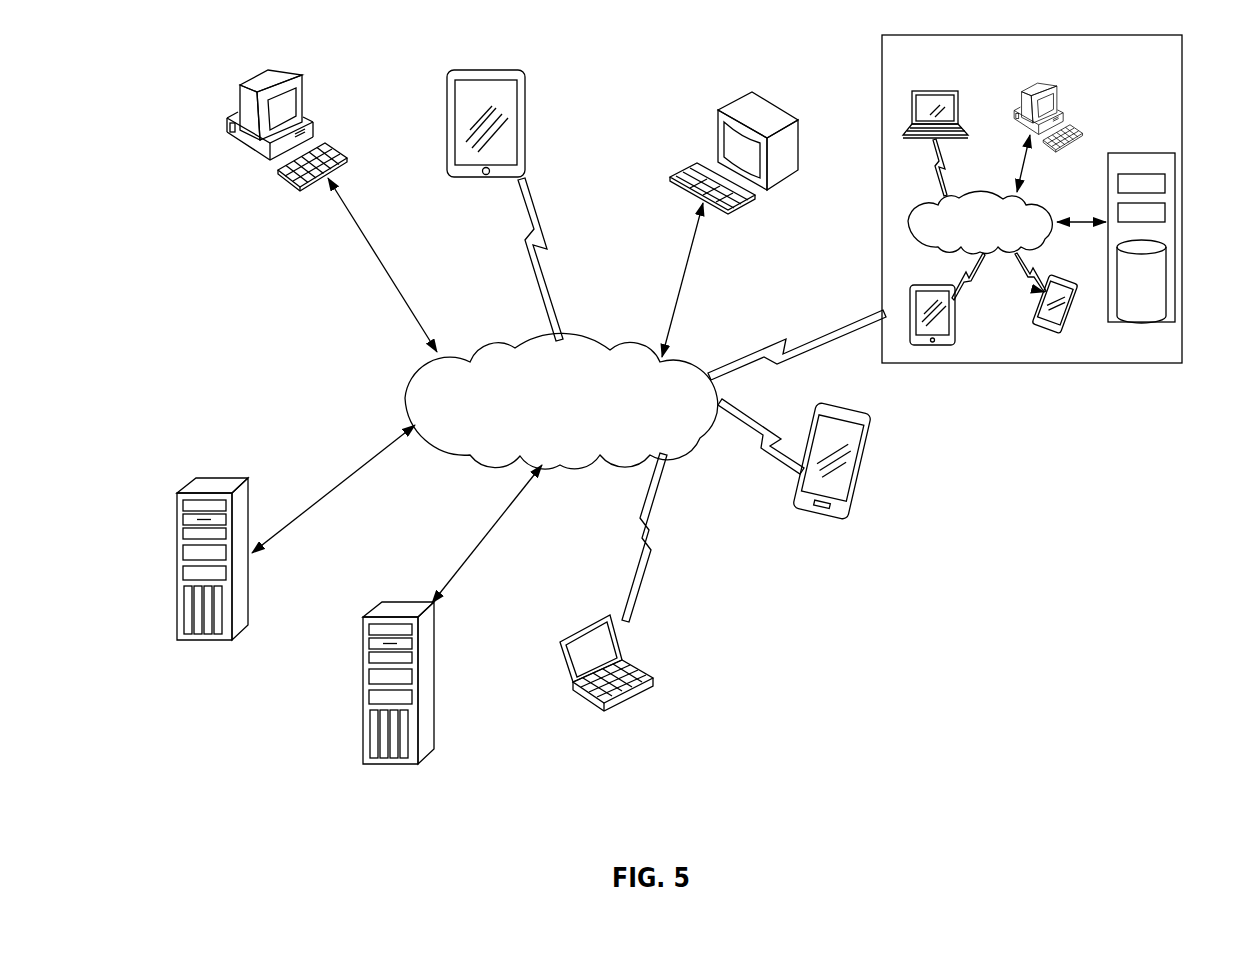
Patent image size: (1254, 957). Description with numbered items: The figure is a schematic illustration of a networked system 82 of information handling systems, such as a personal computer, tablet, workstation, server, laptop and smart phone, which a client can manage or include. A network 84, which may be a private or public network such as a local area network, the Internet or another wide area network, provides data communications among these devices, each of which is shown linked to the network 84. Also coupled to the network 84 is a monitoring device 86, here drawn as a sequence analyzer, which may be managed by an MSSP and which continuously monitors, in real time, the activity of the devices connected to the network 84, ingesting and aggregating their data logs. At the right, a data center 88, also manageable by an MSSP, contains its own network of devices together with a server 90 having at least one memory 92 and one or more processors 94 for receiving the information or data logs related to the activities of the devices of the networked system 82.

The networked system 82 is at (176, 328).
The network 84 is at (575, 336).
The monitoring device 86 is at (441, 653).
The data center 88 is at (1097, 365).
The server 90 is at (1143, 208).
The memory 92 is at (1165, 286).
The processor 94 is at (1168, 212).